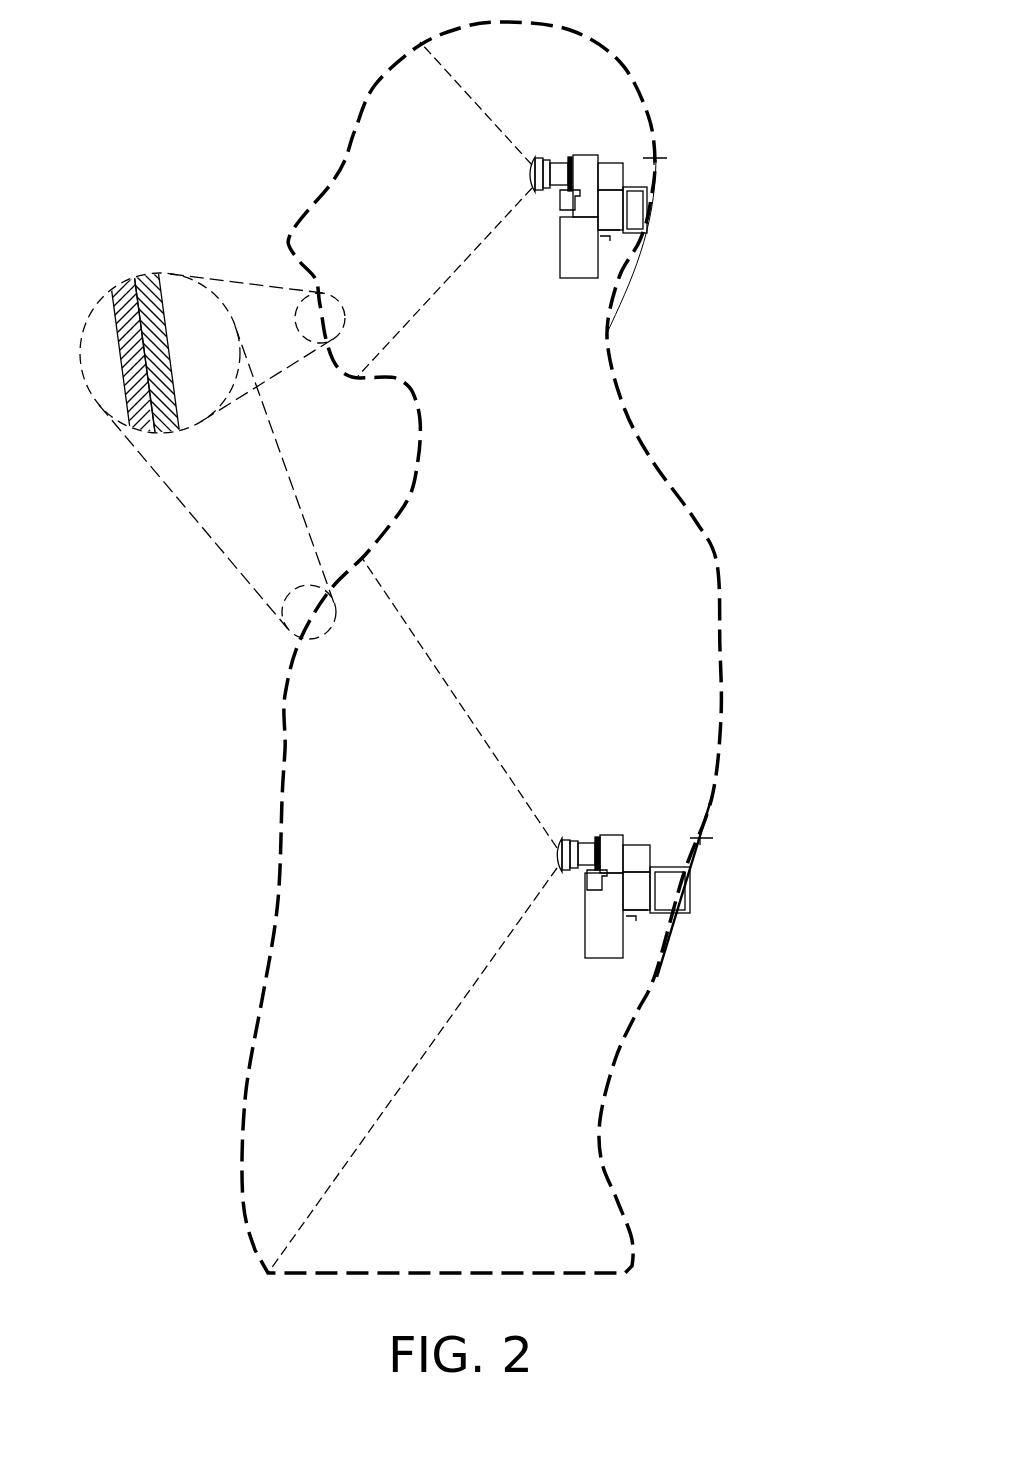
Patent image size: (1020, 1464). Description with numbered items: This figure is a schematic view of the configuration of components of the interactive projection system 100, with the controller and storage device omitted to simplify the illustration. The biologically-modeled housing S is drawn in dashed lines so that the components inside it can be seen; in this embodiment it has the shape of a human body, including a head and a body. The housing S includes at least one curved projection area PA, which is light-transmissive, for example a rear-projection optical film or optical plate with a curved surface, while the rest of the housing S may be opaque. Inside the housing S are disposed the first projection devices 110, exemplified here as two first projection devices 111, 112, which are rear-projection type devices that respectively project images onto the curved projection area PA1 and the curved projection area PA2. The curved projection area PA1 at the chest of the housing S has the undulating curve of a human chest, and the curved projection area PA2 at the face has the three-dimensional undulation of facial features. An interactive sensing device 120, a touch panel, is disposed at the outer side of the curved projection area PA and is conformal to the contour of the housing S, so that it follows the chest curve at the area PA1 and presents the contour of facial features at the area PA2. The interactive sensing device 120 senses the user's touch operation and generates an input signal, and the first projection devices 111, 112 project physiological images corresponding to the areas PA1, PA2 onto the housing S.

The interactive projection system 100 is at (458, 647).
The first projection device 110 is at (555, 657).
The first projection device 111 is at (633, 847).
The first projection device 112 is at (613, 172).
The interactive sensing device 120 is at (130, 376).
The curved projection area PA is at (192, 414).
The curved projection area PA1 is at (280, 782).
The curved projection area PA2 is at (343, 148).
The biologically-modeled housing S is at (717, 563).